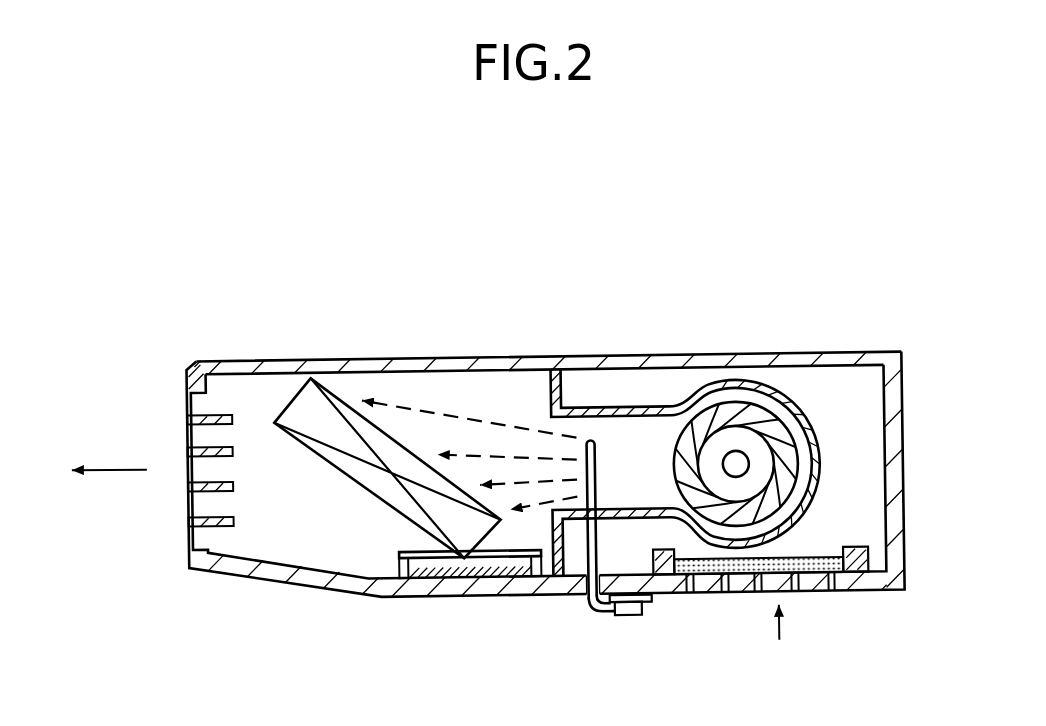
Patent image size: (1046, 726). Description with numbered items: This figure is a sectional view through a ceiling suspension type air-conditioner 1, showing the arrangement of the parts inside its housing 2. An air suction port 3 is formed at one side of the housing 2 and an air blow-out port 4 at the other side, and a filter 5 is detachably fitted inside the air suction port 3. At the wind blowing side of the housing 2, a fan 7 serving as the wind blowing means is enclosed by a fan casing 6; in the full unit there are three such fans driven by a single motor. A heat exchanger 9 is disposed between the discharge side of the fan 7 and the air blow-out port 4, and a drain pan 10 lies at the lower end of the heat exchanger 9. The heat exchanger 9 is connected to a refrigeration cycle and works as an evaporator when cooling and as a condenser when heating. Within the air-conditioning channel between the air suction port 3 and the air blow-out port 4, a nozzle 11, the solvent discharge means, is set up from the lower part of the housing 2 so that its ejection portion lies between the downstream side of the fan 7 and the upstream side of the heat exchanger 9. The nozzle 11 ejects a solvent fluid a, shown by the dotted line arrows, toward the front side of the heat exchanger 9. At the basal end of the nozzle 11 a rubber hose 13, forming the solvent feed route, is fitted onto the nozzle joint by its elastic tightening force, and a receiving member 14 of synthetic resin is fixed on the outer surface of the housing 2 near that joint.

The air-conditioner 1 is at (799, 343).
The housing 2 is at (617, 358).
The air suction port 3 is at (810, 597).
The air blow-out port 4 is at (188, 432).
The filter 5 is at (742, 578).
The fan casing 6 is at (817, 451).
The fan 7 is at (725, 386).
The heat exchanger 9 is at (293, 393).
The drain pan 10 is at (393, 561).
The nozzle 11 is at (598, 484).
The rubber hose 13 is at (590, 613).
The receiving member 14 is at (627, 614).
The solvent fluid a is at (453, 417).